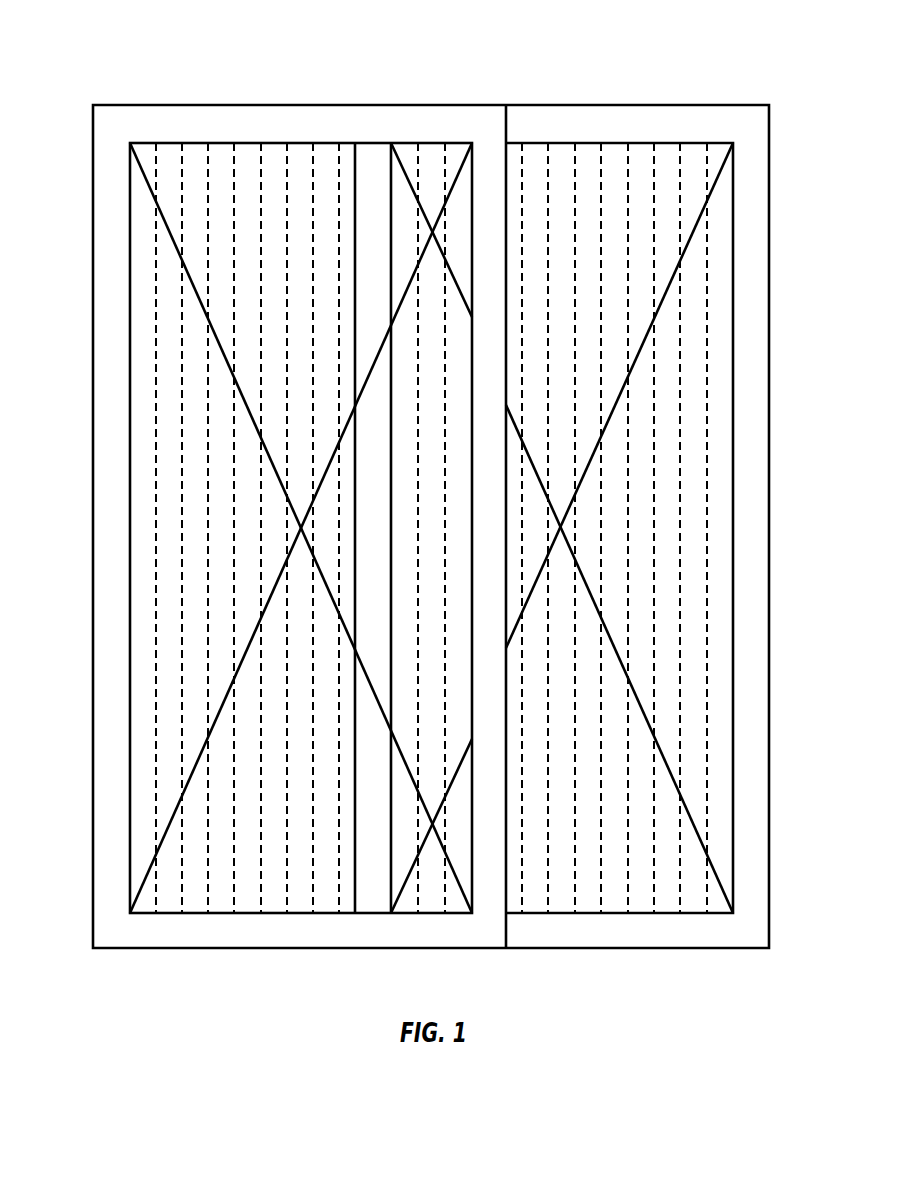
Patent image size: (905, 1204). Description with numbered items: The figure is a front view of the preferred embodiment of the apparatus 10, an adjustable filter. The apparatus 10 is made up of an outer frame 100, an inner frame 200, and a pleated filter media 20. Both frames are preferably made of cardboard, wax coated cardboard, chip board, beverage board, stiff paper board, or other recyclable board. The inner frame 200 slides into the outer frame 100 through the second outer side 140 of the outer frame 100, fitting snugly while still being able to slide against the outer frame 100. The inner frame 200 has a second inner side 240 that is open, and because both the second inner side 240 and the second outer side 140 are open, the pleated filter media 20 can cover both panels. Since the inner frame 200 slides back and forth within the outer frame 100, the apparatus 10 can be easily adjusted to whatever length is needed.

The apparatus 10 is at (99, 38).
The pleated filter media 20 is at (680, 505).
The outer frame 100 is at (120, 105).
The second outer side 140 is at (506, 165).
The inner frame 200 is at (740, 105).
The second inner side 240 is at (355, 165).